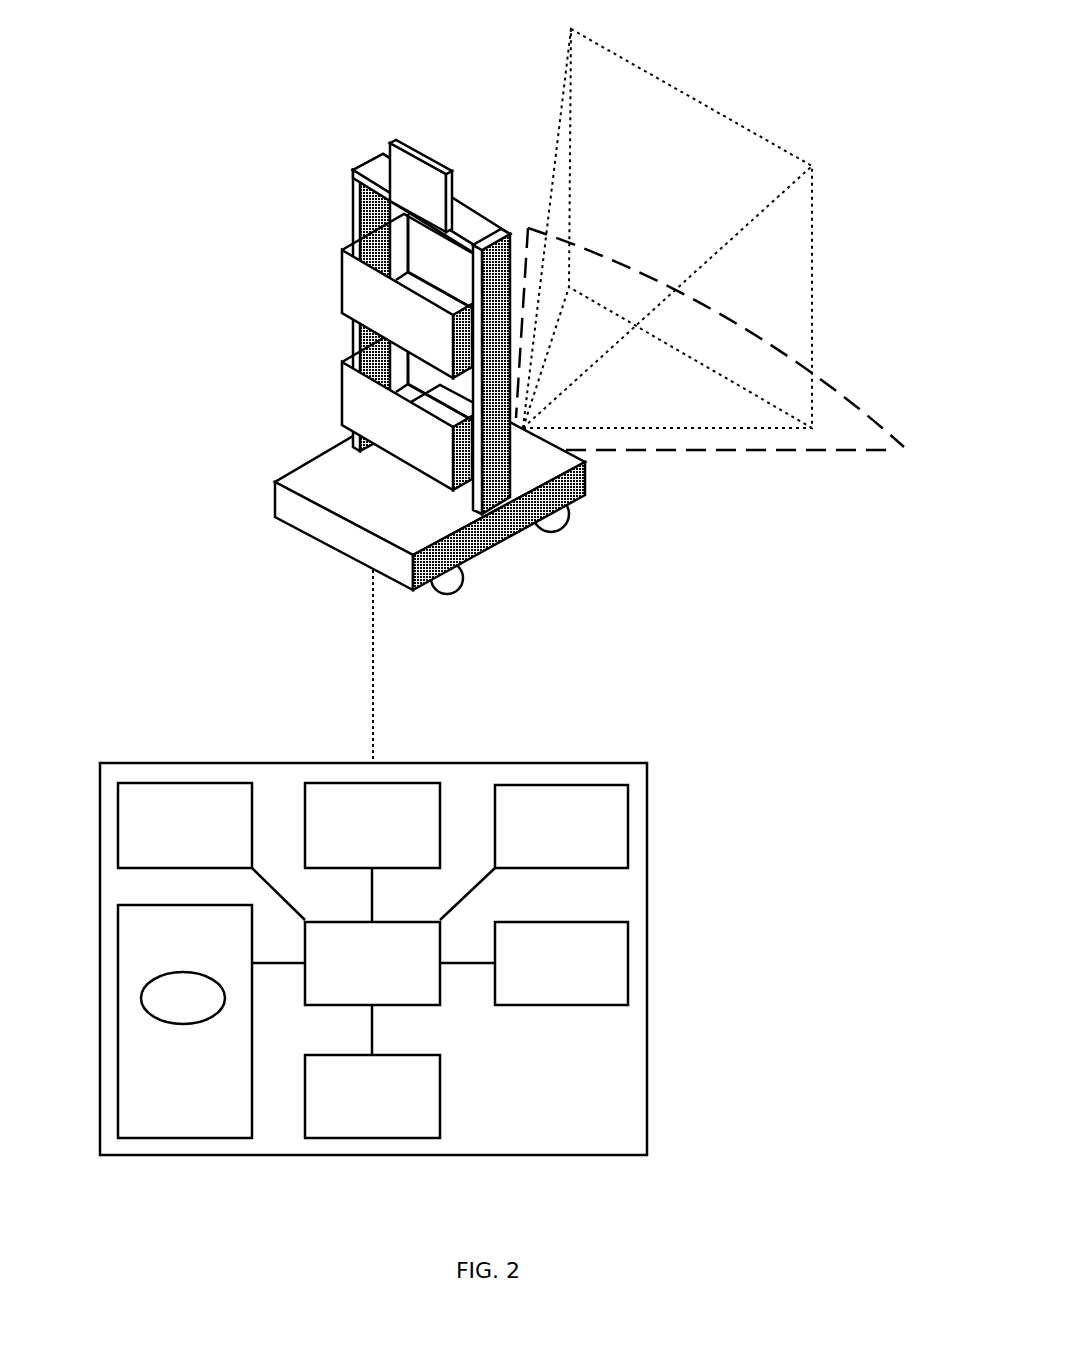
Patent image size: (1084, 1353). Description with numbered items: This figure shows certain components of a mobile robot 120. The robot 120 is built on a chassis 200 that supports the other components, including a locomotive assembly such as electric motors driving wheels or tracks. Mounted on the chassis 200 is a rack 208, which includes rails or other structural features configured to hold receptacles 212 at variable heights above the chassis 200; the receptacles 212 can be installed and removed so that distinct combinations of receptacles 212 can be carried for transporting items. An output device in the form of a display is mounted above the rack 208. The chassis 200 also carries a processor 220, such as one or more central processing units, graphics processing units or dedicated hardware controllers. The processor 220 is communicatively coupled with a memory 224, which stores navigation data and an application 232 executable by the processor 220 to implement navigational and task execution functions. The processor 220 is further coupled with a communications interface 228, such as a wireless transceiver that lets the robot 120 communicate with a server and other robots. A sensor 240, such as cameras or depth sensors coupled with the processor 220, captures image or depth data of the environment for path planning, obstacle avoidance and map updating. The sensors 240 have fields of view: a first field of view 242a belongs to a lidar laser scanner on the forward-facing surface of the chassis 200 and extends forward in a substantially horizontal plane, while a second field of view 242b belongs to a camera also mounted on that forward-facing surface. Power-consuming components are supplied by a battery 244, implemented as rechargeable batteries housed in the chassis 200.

The robot 120 is at (435, 372).
The chassis 200 is at (586, 462).
The rack 208 is at (358, 197).
The receptacles 212 is at (350, 277).
The processor 220 is at (372, 963).
The memory 224 is at (185, 1021).
The communications interface 228 is at (185, 825).
The application 232 is at (183, 998).
The sensor 240 is at (372, 825).
The first field of view 242a is at (816, 452).
The second field of view 242b is at (745, 127).
The battery 244 is at (561, 963).